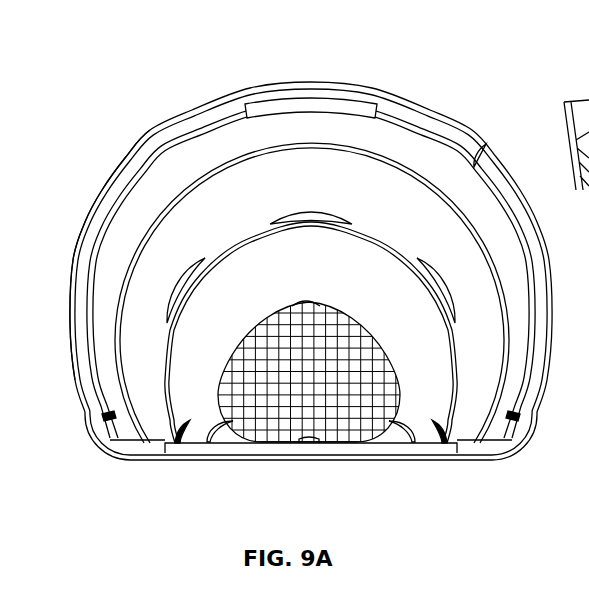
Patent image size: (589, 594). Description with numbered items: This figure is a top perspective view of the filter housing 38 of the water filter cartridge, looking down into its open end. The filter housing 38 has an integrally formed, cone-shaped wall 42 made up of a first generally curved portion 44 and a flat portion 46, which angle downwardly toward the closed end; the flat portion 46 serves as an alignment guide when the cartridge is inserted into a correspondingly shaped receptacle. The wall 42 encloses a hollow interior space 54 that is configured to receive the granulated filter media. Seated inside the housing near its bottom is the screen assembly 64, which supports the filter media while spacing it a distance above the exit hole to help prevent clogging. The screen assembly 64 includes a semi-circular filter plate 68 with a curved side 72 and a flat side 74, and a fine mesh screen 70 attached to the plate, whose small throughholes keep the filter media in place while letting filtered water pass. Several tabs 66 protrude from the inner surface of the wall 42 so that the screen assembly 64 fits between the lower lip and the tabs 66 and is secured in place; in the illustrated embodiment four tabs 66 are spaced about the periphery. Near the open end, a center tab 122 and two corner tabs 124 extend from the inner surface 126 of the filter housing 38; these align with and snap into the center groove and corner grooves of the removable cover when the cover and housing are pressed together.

The filter housing 38 is at (376, 80).
The cone-shaped wall 42 is at (129, 161).
The curved portion 44 is at (225, 100).
The flat portion 46 is at (180, 462).
The hollow interior space 54 is at (243, 214).
The screen assembly 64 is at (201, 408).
The tabs 66 is at (306, 300).
The filter plate 68 is at (218, 385).
The screen 70 is at (330, 347).
The curved side 72 is at (252, 320).
The flat side 74 is at (340, 444).
The center tab 122 is at (314, 101).
The corner tabs 124 is at (118, 440).
The inner surface 126 is at (478, 156).